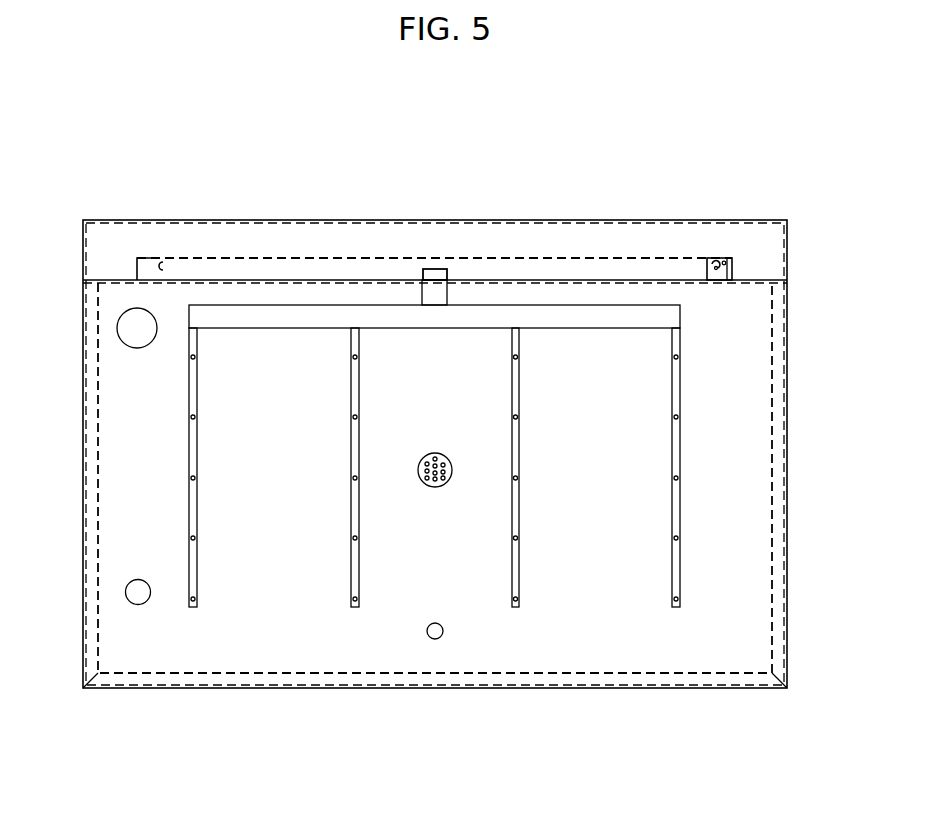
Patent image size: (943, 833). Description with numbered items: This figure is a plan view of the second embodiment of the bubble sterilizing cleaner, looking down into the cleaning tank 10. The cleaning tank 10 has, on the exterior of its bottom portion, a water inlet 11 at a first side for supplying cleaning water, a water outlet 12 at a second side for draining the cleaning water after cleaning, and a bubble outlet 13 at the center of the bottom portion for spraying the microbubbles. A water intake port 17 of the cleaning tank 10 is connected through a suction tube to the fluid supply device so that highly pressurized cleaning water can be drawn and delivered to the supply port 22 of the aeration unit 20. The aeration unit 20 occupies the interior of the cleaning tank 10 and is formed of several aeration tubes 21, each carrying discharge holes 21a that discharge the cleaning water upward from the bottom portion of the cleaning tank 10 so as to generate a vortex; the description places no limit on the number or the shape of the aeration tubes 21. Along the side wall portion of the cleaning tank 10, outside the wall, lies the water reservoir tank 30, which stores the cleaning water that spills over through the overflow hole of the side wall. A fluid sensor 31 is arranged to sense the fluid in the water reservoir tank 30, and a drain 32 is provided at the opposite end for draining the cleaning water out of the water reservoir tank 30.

The cleaning tank 10 is at (98, 490).
The water inlet 11 is at (435, 639).
The water outlet 12 is at (145, 603).
The bubble outlet 13 is at (449, 480).
The water intake port 17 is at (117, 325).
The aeration unit 20 is at (523, 455).
The aeration tube 21 is at (677, 442).
The discharge hole 21a is at (677, 538).
The supply port 22 is at (440, 268).
The water reservoir tank 30 is at (255, 257).
The fluid sensor 31 is at (707, 262).
The drain 32 is at (172, 257).